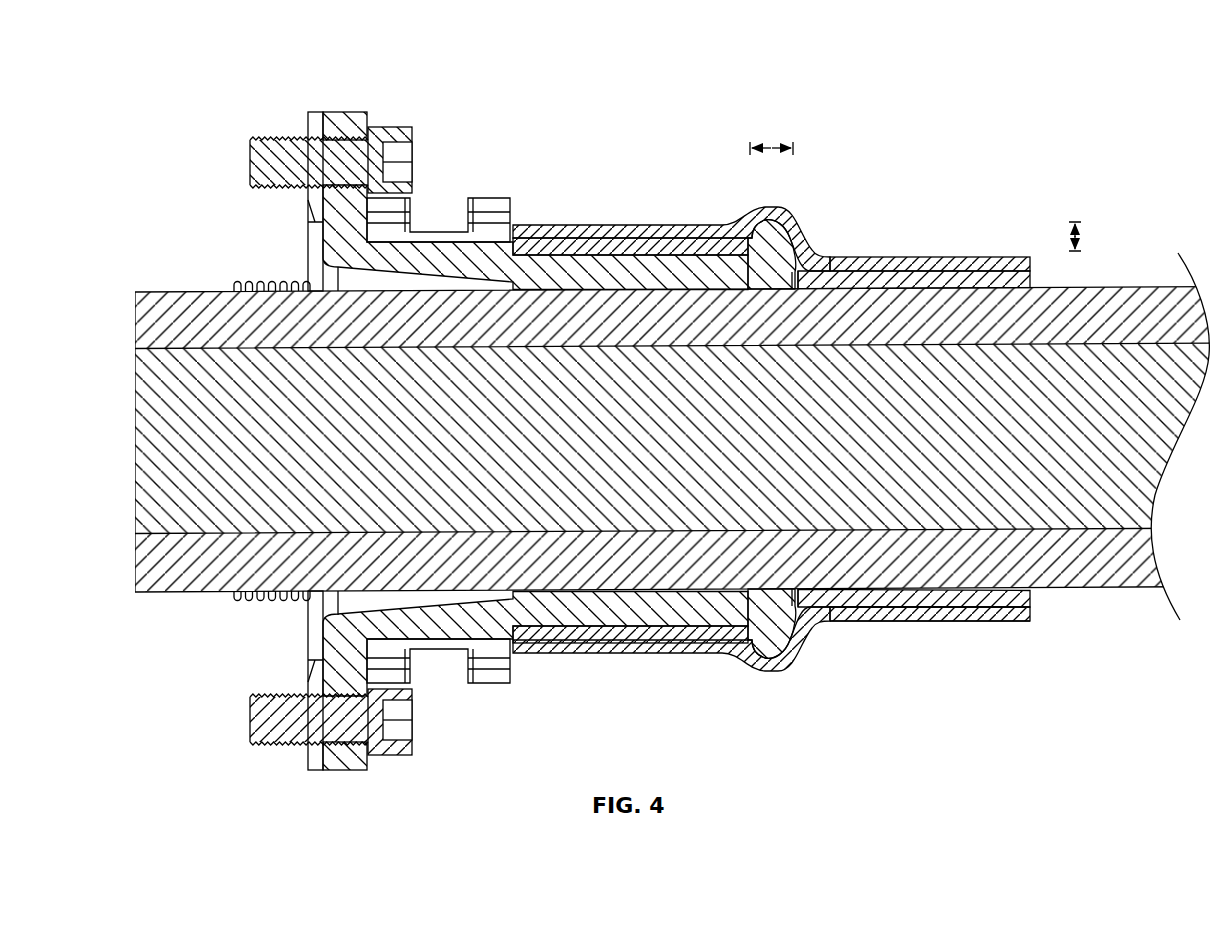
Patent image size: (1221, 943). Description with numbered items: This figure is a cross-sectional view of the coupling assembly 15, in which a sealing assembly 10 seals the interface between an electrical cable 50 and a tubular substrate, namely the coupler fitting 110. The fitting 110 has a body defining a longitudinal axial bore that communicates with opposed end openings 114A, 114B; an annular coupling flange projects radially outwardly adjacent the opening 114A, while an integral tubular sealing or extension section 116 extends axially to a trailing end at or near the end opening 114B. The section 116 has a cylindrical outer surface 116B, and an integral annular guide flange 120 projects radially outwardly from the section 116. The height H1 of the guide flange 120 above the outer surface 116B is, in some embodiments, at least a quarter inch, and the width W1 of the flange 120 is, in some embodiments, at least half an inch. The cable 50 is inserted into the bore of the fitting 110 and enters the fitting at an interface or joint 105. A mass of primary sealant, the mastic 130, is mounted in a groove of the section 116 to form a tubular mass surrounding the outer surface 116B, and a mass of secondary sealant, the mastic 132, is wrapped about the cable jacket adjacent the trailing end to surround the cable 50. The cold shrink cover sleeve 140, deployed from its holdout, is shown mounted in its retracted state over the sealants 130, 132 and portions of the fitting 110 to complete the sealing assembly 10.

The sealing assembly 10 is at (678, 326).
The coupling assembly 15 is at (547, 105).
The electrical cable 50 is at (1122, 287).
The interface or joint 105 is at (843, 729).
The tubular substrate (coupler fitting) 110 is at (447, 697).
The end opening 114A is at (310, 577).
The end opening 114B is at (806, 556).
The tubular sealing or extension section 116 is at (640, 603).
The cylindrical outer surface 116B is at (633, 248).
The guide flange 120 is at (763, 242).
The primary sealant (mastic) 130 is at (583, 248).
The secondary sealant (mastic) 132 is at (925, 283).
The protective cover tube or sleeve 140 is at (867, 253).
The width of the flange W1 is at (772, 148).
The height of the guide flange H1 is at (1075, 222).